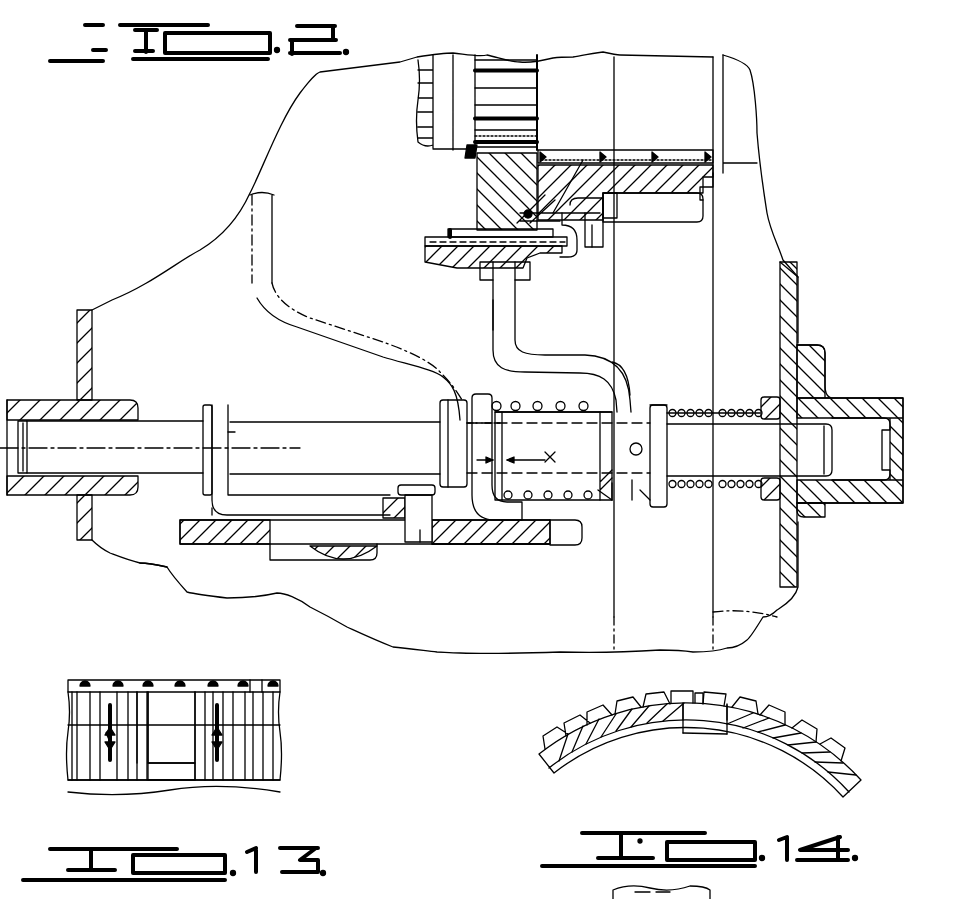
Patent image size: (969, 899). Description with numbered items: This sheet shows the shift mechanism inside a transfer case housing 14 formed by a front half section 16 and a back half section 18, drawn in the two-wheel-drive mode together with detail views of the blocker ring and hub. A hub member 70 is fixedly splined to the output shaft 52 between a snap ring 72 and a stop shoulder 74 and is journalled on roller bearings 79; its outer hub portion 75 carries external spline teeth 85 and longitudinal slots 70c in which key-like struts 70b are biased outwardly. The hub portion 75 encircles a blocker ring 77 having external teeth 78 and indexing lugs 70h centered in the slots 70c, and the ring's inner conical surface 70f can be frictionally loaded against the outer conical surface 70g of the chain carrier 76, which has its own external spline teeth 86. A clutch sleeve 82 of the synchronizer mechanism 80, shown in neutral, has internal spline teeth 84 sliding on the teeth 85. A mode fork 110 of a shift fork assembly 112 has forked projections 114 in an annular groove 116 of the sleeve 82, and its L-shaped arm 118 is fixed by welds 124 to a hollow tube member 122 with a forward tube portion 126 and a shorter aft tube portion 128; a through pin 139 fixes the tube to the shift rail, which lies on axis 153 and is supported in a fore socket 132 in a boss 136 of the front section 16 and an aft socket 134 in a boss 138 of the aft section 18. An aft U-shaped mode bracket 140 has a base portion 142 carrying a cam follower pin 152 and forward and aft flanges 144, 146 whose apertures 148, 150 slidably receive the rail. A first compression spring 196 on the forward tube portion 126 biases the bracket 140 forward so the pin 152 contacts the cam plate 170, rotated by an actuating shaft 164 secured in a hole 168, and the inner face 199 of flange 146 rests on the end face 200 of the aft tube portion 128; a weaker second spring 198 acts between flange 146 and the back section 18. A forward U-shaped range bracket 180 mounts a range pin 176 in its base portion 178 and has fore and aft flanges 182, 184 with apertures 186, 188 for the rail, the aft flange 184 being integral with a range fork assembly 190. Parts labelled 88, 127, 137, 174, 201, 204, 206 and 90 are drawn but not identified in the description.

In FIG. 2, the output shaft 52 is at (462, 62).
In FIG. 2, the stop shoulder 74 is at (527, 97).
In FIG. 2, the snap ring 72 is at (468, 150).
In FIG. 2, the roller bearings 79 is at (685, 158).
In FIG. 2, the external spline teeth 85 is at (530, 203).
In FIG. 13, the external spline teeth 85 is at (107, 705).
In FIG. 14, the external spline teeth 85 is at (807, 720).
In FIG. 2, the hub member 70 is at (490, 182).
In FIG. 2, the chain carrier 76 is at (633, 172).
In FIG. 2, the chain carrier outer conical surface 70g is at (583, 160).
In FIG. 2, the blocker ring inner conical surface 70f is at (653, 208).
In FIG. 2, the housing shoulder 88 is at (688, 210).
In FIG. 2, the blocker ring 77 is at (608, 212).
In FIG. 13, the blocker ring 77 is at (70, 693).
In FIG. 14, the blocker ring 77 is at (582, 766).
In FIG. 2, the synchronizer mechanism 80 is at (598, 256).
In FIG. 2, the external spline teeth 86 is at (600, 245).
In FIG. 2, the external tooth 78 is at (568, 228).
In FIG. 13, the external tooth 78 is at (250, 682).
In FIG. 14, the external tooth 78 is at (679, 697).
In FIG. 2, the outer hub portion 75 is at (456, 230).
In FIG. 13, the outer hub portion 75 is at (283, 750).
In FIG. 14, the outer hub portion 75 is at (570, 765).
In FIG. 2, the internal spline teeth 84 is at (432, 236).
In FIG. 2, the clutch sleeve 82 is at (440, 253).
In FIG. 13, the clutch sleeve 82 is at (283, 793).
In FIG. 2, the annular groove 116 is at (490, 282).
In FIG. 2, the forked projections 114 is at (512, 282).
In FIG. 2, the mode fork 110 is at (492, 312).
In FIG. 2, the shift fork assembly 112 is at (432, 368).
In FIG. 2, the range fork assembly 190 is at (248, 292).
In FIG. 2, the front half section 16 is at (78, 333).
In FIG. 2, the boss 136 is at (40, 405).
In FIG. 2, the fore socket 132 is at (46, 465).
In FIG. 2, the longitudinal axis 153 is at (153, 446).
In FIG. 2, the forward flange 182 is at (220, 403).
In FIG. 2, the aperture 186 is at (232, 432).
In FIG. 2, the base portion 178 is at (262, 497).
In FIG. 2, the range bracket 180 is at (206, 507).
In FIG. 2, the cam plate 170 is at (185, 543).
In FIG. 2, the actuating shaft 164 is at (283, 558).
In FIG. 2, the hole 168 is at (342, 560).
In FIG. 2, the pin 174 is at (420, 532).
In FIG. 2, the range pin 176 is at (424, 548).
In FIG. 2, the aperture 188 is at (443, 520).
In FIG. 2, the mode bracket 140 is at (526, 522).
In FIG. 2, the cam follower pin 152 is at (567, 544).
In FIG. 2, the block 127 is at (583, 520).
In FIG. 2, the aft flange 184 is at (453, 402).
In FIG. 2, the aperture 148 is at (468, 434).
In FIG. 2, the forward flange 144 is at (481, 394).
In FIG. 2, the gap 204 is at (495, 443).
In FIG. 2, the spring housing 206 is at (500, 432).
In FIG. 2, the through pin 139 is at (572, 451).
In FIG. 2, the first compression helical spring 196 is at (532, 403).
In FIG. 2, the forward tube portion 126 is at (570, 410).
In FIG. 2, the aperture 150 is at (673, 463).
In FIG. 2, the end face 200 is at (644, 449).
In FIG. 2, the inner face 199 is at (650, 425).
In FIG. 2, the tube end 137 is at (614, 410).
In FIG. 2, the L-shaped offset arm 118 is at (640, 410).
In FIG. 2, the aft flange 146 is at (689, 404).
In FIG. 2, the second compression helical spring 198 is at (726, 408).
In FIG. 2, the retainer 201 is at (690, 398).
In FIG. 2, the base portion 142 is at (637, 490).
In FIG. 2, the aft tube portion 128 is at (633, 480).
In FIG. 2, the tube member 122 is at (604, 495).
In FIG. 2, the welds 124 is at (612, 485).
In FIG. 2, the back half section 18 is at (797, 555).
In FIG. 2, the boss 138 is at (846, 397).
In FIG. 2, the aft socket 134 is at (866, 481).
In FIG. 2, the housing bottom 90 is at (777, 617).
In FIG. 13, the slots 70c is at (151, 678).
In FIG. 14, the slots 70c is at (680, 735).
In FIG. 13, the indexing lugs 70h is at (168, 703).
In FIG. 14, the indexing lugs 70h is at (700, 704).
In FIG. 13, the struts 70b is at (168, 775).
In FIG. 13, the housing 14 is at (108, 732).